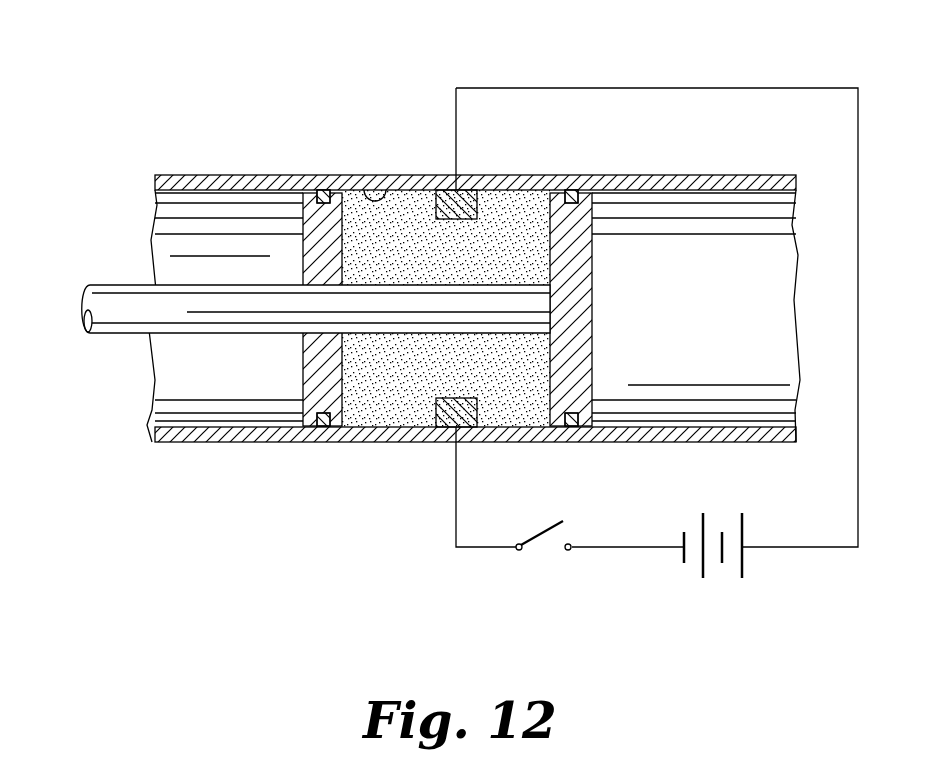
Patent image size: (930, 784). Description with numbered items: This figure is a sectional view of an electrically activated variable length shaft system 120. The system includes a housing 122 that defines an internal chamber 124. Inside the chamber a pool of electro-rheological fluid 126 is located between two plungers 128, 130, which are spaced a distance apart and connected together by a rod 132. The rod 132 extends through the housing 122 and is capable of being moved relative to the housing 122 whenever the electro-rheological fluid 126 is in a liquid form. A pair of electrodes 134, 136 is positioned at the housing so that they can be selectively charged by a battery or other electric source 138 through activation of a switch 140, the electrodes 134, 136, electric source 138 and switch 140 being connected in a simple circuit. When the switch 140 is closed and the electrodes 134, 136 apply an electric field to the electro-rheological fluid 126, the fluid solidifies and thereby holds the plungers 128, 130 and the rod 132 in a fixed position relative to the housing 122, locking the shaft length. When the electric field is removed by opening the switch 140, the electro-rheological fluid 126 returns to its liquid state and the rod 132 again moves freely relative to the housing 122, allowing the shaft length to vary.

The electrically activated variable length shaft system 120 is at (287, 504).
The housing 122 is at (257, 175).
The internal chamber 124 is at (388, 175).
The electro-rheological fluid 126 is at (395, 380).
The plunger 128 is at (582, 242).
The plunger 130 is at (316, 395).
The rod 132 is at (117, 318).
The electrode 134 is at (470, 205).
The electrode 136 is at (518, 442).
The battery or other electric source 138 is at (744, 562).
The switch 140 is at (547, 533).